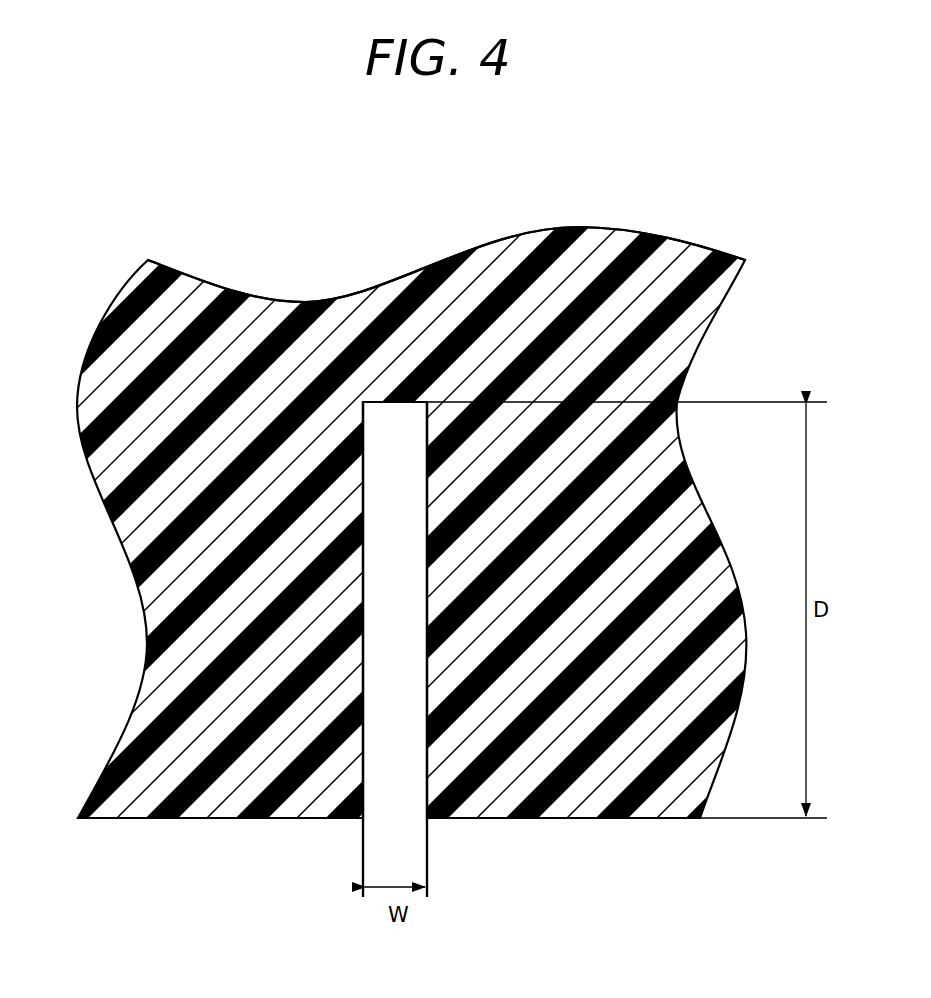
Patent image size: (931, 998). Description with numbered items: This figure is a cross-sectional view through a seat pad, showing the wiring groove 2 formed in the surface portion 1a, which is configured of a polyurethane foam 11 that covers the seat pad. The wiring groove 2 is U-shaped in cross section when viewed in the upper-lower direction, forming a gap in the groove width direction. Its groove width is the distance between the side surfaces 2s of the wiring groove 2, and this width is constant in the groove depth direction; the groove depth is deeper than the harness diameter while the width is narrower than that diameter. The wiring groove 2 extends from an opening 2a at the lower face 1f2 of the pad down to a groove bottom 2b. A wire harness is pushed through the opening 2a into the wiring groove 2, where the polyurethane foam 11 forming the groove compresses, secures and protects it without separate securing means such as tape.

The polyurethane foam 11 is at (478, 265).
The surface portion 1a is at (446, 222).
The wiring groove 2 is at (396, 517).
The groove bottom 2b is at (400, 402).
The side surfaces 2s is at (363, 680).
The opening 2a is at (393, 804).
The lower surface 1f2 is at (220, 818).